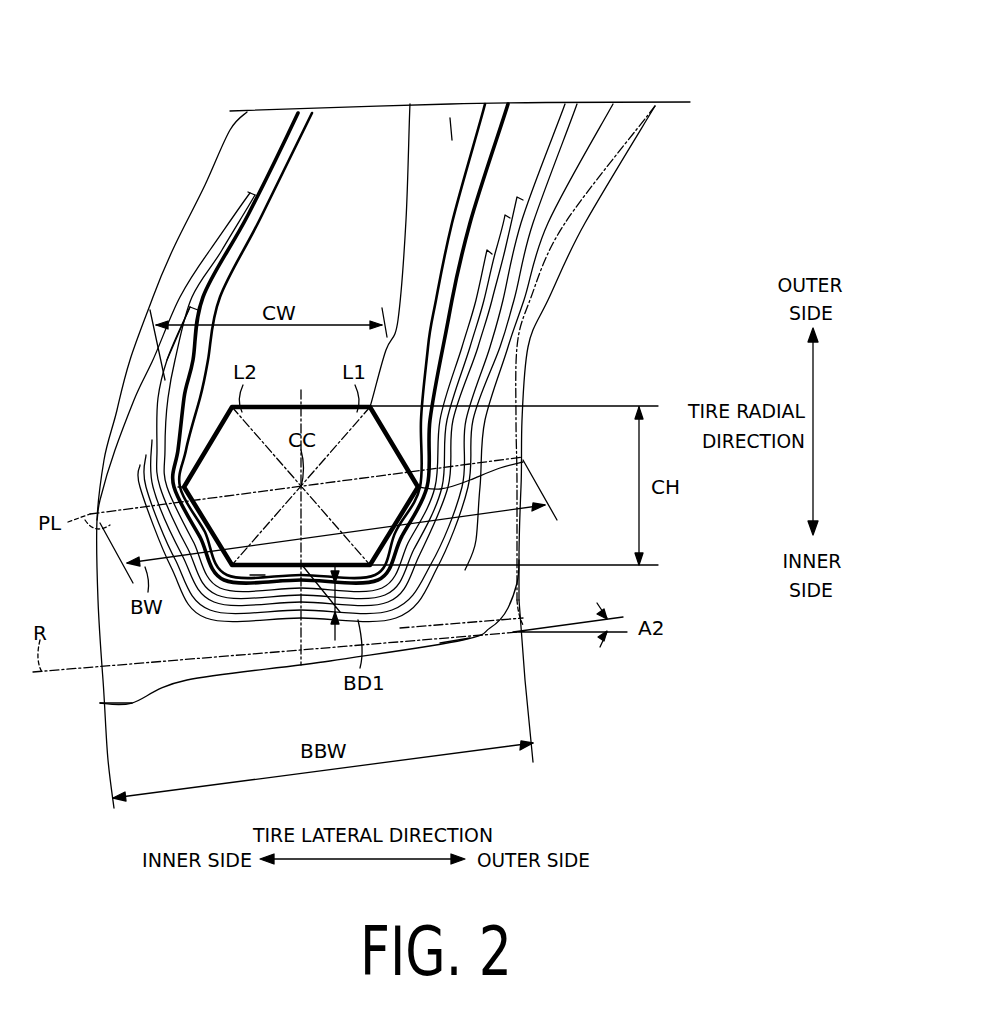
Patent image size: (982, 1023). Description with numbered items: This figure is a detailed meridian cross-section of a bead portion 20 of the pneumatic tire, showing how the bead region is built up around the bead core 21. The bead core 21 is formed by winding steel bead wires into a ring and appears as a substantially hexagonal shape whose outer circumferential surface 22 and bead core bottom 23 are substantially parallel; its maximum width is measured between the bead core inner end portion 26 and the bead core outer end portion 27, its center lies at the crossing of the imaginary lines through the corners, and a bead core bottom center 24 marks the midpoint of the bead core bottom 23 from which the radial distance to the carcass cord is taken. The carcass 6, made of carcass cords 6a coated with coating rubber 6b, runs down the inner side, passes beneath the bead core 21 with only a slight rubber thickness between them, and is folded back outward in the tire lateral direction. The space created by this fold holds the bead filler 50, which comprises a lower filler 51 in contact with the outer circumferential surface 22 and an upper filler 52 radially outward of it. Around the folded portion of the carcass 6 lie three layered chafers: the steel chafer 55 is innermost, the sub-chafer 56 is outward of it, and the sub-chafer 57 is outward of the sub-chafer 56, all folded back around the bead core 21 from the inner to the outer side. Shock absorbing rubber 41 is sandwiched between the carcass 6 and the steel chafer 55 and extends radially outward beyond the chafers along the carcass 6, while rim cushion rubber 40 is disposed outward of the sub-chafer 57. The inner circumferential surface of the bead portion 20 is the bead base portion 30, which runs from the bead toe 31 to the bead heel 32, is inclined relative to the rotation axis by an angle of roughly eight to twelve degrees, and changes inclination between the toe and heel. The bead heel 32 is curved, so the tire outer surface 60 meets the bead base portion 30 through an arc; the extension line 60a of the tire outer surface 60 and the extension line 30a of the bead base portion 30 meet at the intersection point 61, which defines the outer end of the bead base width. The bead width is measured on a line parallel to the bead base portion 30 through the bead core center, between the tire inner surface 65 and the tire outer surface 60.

The carcass 6 is at (340, 317).
The carcass cord 6a is at (312, 112).
The coating rubber 6b is at (298, 112).
The bead portion 20 is at (96, 398).
The bead core 21 is at (217, 465).
The outer circumferential surface 22 is at (301, 407).
The bead core bottom 23 is at (258, 577).
The bead core bottom center 24 is at (287, 582).
The bead core inner end portion 26 is at (184, 487).
The bead core outer end portion 27 is at (520, 458).
The bead base portion 30 is at (333, 640).
The extension line of bead base portion 30a is at (470, 640).
The bead toe 31 is at (100, 703).
The bead heel 32 is at (490, 655).
The rim cushion rubber 40 is at (502, 540).
The shock absorbing rubber 41 is at (536, 120).
The bead filler 50 is at (407, 216).
The lower filler 51 is at (362, 118).
The upper filler 52 is at (449, 101).
The steel chafer 55 is at (480, 280).
The sub-chafer 56 is at (505, 237).
The sub-chafer 57 is at (523, 202).
The tire outer surface 60 is at (527, 363).
The extension line of tire outer surface 60a is at (521, 620).
The intersection point 61 is at (520, 633).
The tire inner surface 65 is at (95, 581).